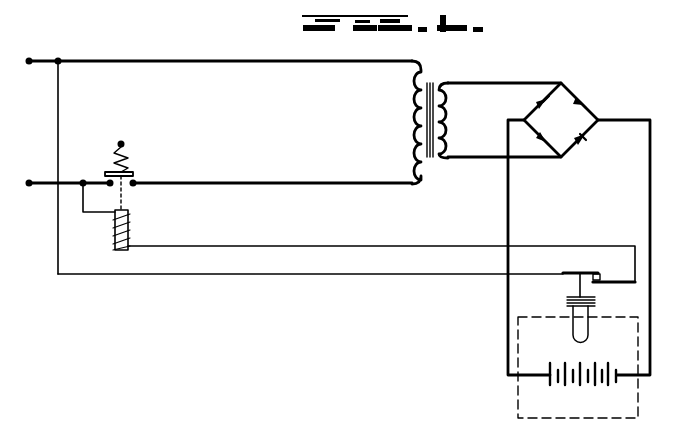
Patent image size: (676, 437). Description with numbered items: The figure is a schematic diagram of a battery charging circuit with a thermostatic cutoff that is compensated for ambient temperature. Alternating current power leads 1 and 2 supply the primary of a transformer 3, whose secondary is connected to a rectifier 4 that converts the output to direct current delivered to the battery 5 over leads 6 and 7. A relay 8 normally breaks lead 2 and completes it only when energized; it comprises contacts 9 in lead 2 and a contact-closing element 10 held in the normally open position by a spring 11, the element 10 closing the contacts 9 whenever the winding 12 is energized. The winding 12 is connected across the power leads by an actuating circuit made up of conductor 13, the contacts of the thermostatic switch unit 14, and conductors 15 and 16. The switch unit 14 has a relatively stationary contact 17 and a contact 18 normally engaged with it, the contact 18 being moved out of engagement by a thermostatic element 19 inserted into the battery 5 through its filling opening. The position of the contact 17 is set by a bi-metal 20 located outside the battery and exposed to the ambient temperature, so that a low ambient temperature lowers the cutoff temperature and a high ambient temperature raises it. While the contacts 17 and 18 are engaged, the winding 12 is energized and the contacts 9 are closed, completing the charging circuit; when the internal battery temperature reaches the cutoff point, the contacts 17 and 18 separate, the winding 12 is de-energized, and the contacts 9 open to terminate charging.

The alternating current power lead 1 is at (250, 63).
The alternating current power lead 2 is at (280, 183).
The transformer 3 is at (440, 75).
The rectifier 4 is at (523, 120).
The battery 5 is at (608, 382).
The lead 6 is at (508, 213).
The lead 7 is at (650, 226).
The relay 8 is at (130, 195).
The contacts 9 is at (110, 172).
The contact-closing element 10 is at (108, 144).
The spring 11 is at (128, 163).
The winding 12 is at (128, 240).
The conductor 13 is at (274, 277).
The thermostatic switch unit 14 is at (595, 283).
The conductor 15 is at (289, 248).
The conductor 16 is at (98, 216).
The stationary contact 17 is at (599, 276).
The contact 18 is at (568, 271).
The thermostatic element 19 is at (568, 305).
The bi-metal 20 is at (635, 284).